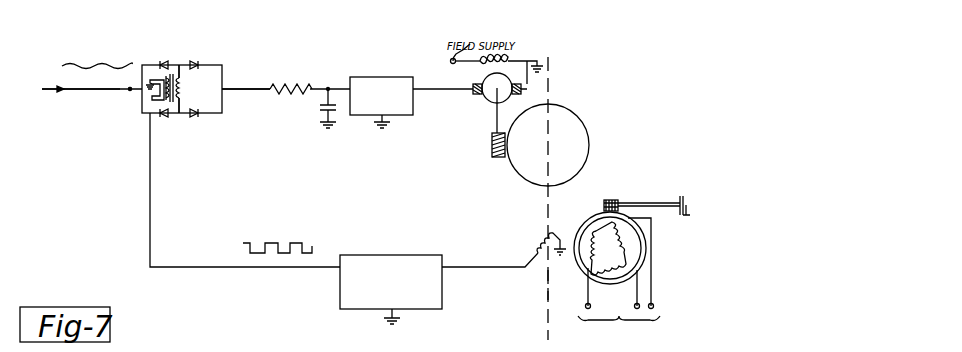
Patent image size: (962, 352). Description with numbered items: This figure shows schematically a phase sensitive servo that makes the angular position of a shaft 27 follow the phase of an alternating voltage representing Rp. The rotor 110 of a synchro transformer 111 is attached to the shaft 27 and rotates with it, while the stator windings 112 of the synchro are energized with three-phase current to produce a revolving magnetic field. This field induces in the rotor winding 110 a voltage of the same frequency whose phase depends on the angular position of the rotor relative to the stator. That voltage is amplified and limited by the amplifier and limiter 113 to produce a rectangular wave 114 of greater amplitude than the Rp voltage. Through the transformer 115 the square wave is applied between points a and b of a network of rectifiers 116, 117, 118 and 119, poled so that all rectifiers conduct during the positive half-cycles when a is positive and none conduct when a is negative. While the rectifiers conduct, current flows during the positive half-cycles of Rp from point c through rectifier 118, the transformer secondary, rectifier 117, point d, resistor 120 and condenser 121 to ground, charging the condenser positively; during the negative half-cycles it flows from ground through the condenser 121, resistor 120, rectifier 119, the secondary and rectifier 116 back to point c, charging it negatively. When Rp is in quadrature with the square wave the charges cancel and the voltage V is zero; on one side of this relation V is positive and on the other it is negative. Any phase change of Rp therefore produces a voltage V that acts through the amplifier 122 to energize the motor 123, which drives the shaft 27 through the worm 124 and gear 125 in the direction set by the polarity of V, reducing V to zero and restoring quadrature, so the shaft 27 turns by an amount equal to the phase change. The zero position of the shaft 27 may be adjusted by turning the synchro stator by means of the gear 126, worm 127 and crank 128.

The alternating voltage representing Rp is at (80, 89).
The point c is at (130, 89).
The transformer 115 is at (186, 82).
The rectifier 116 is at (162, 63).
The rectifier 117 is at (200, 62).
The rectifier 118 is at (161, 116).
The rectifier 119 is at (202, 116).
The point a is at (181, 62).
The point b is at (185, 116).
The point d is at (237, 87).
The resistor 120 is at (292, 84).
The condenser 121 is at (320, 109).
The voltage V is at (330, 88).
The amplifier 122 is at (399, 77).
The motor 123 is at (489, 106).
The worm 124 is at (493, 150).
The gear 125 is at (588, 122).
The shaft 27 is at (555, 92).
The worm 127 is at (614, 200).
The crank 128 is at (690, 212).
The gear 126 is at (617, 278).
The stator windings 112 is at (608, 248).
The rectangular wave 114 is at (269, 243).
The amplifier and limiter 113 is at (398, 255).
The rotor winding 110 is at (535, 250).
The synchro transformer 111 is at (574, 290).